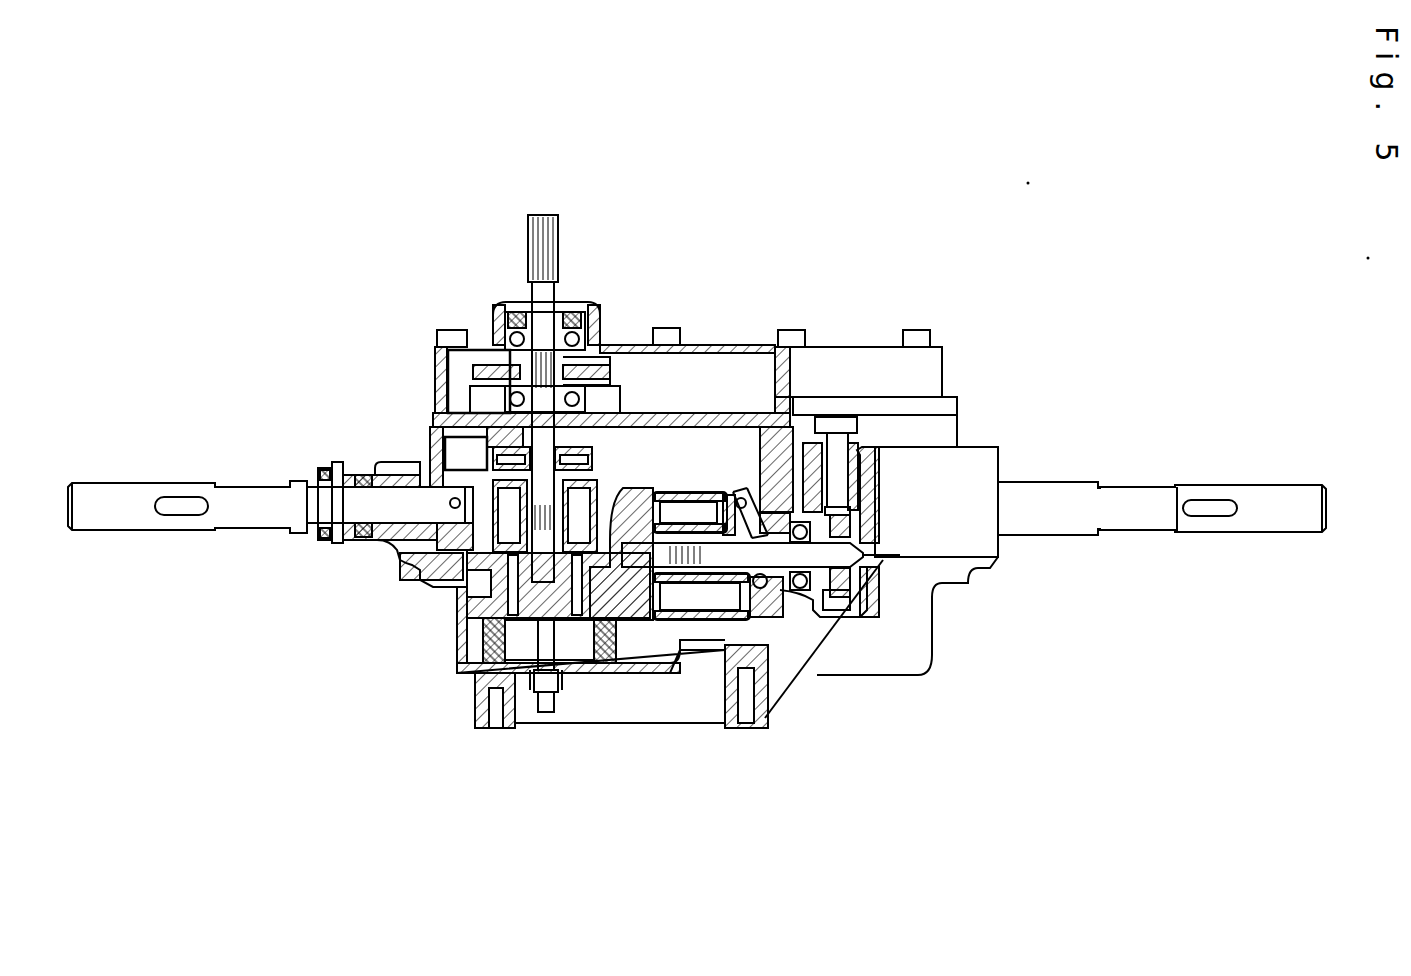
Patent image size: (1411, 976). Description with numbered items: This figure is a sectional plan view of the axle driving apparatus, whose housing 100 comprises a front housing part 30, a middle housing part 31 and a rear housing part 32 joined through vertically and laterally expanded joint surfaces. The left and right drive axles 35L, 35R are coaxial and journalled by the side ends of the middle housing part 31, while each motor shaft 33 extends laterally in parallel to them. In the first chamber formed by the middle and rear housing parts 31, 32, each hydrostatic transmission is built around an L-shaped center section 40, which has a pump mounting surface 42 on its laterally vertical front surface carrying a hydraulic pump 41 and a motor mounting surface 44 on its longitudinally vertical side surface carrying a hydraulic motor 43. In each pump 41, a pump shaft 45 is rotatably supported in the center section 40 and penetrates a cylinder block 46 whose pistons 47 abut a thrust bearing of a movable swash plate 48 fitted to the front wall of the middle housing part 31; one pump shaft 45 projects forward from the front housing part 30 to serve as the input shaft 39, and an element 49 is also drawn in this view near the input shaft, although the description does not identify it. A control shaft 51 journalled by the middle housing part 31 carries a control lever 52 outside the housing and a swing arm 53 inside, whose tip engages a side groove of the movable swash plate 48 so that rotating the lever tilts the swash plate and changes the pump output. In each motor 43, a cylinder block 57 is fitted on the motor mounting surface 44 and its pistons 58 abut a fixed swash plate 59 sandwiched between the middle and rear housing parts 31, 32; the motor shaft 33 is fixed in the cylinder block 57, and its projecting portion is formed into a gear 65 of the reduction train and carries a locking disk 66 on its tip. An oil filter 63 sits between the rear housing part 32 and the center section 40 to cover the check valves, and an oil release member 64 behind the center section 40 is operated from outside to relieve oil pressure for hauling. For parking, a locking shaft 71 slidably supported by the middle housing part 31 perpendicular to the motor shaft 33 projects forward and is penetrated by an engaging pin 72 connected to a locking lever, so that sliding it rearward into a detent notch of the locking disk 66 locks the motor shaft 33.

The housing 100 is at (908, 283).
The front housing part 30 is at (683, 346).
The middle housing part 31 is at (955, 447).
The rear housing part 32 is at (928, 650).
The motor shaft 33 is at (870, 553).
The left drive axle 35L is at (195, 534).
The right drive axle 35R is at (1202, 535).
The input shaft 39 is at (560, 243).
The center section 40 is at (480, 650).
The hydraulic pump 41 is at (400, 553).
The pump mounting surface 42 is at (457, 565).
The hydraulic motor 43 is at (693, 628).
The motor mounting surface 44 is at (647, 627).
The pump shaft 45 is at (596, 411).
The cylinder block 46 is at (425, 478).
The piston 47 is at (478, 432).
The movable swash plate 48 is at (440, 395).
The gear 49 is at (470, 372).
The control shaft 51 is at (355, 474).
The control lever 52 is at (325, 466).
The swing arm 53 is at (480, 428).
The cylinder block 57 is at (656, 490).
The piston 58 is at (728, 491).
The fixed swash plate 59 is at (752, 474).
The oil filter 63 is at (467, 665).
The oil release member 64 is at (545, 714).
The gear 65 is at (830, 618).
The locking disk 66 is at (853, 617).
The locking shaft 71 is at (836, 418).
The engaging pin 72 is at (857, 447).